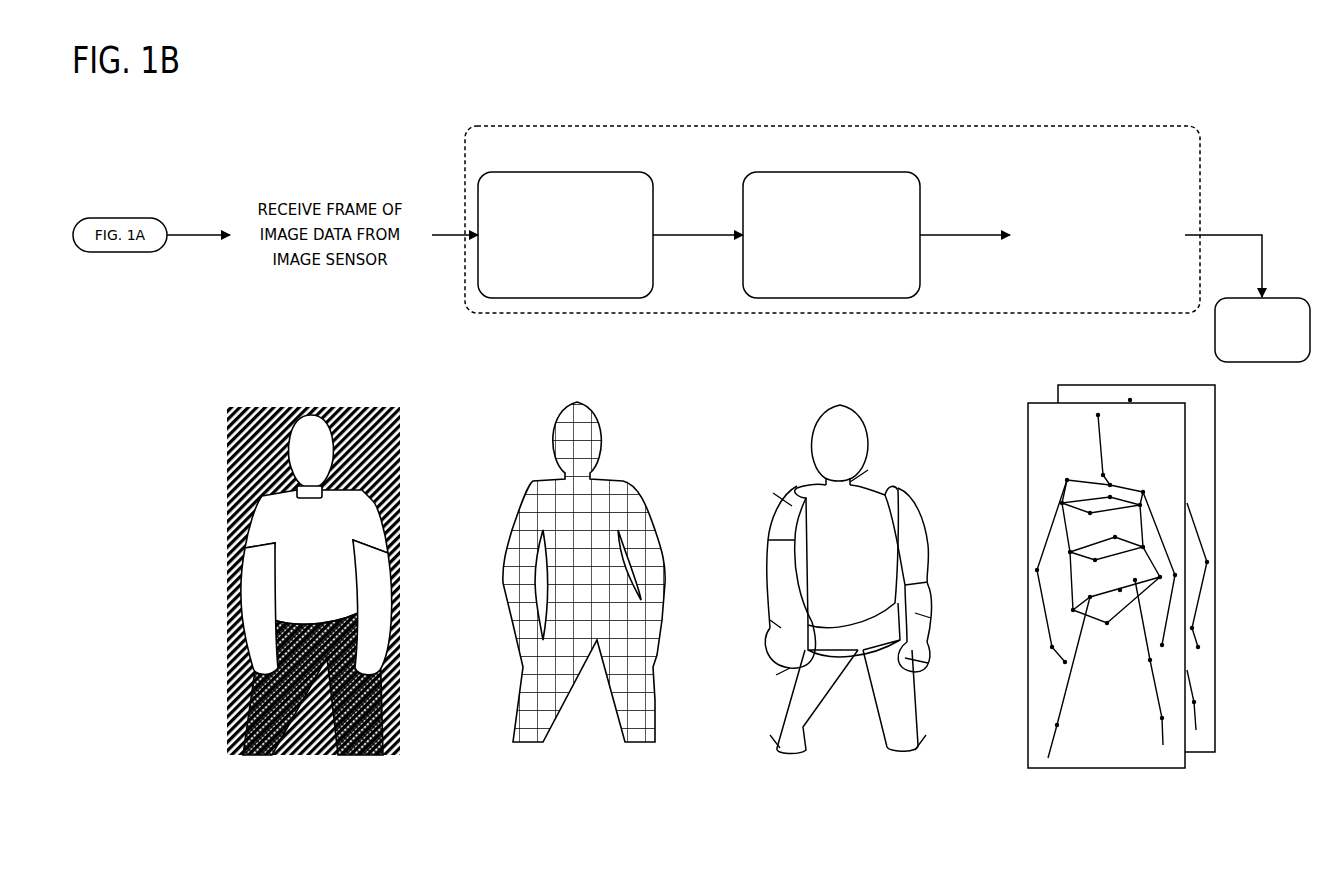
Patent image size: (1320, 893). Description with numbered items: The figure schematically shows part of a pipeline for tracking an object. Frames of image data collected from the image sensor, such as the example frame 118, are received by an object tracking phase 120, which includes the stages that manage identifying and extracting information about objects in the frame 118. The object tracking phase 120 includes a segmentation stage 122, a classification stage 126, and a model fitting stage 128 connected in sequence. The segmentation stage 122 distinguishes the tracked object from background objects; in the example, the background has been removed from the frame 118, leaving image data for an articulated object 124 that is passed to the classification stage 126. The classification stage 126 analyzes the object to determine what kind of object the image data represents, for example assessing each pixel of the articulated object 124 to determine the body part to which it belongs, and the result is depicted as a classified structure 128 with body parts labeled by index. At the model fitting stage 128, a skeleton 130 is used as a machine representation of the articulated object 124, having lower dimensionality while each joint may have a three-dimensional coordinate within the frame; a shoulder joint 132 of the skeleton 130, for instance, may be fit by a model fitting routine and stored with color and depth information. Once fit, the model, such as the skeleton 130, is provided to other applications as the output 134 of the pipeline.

The frame 118 is at (322, 390).
The object tracking phase 120 is at (832, 219).
The segmentation stage 122 is at (565, 235).
The articulated object 124 is at (580, 390).
The classification stage 126 is at (831, 235).
The model fitting stage 128 is at (845, 393).
The skeleton 130 is at (1095, 556).
The shoulder joint 132 is at (1067, 478).
The output 134 is at (1262, 330).